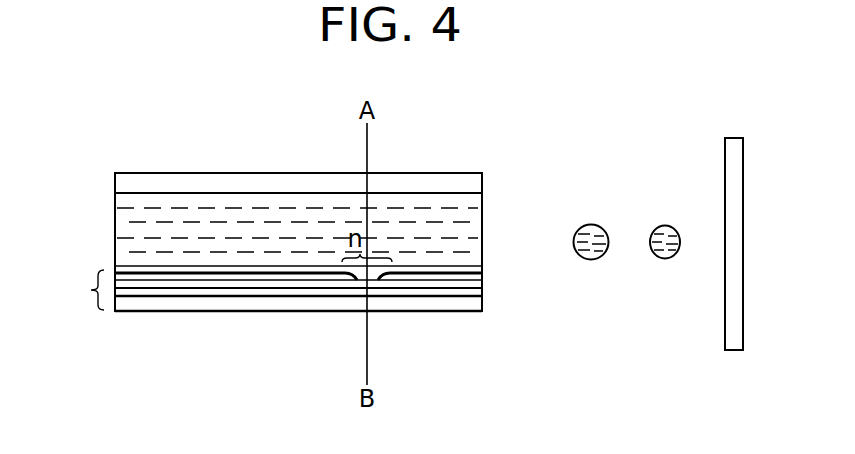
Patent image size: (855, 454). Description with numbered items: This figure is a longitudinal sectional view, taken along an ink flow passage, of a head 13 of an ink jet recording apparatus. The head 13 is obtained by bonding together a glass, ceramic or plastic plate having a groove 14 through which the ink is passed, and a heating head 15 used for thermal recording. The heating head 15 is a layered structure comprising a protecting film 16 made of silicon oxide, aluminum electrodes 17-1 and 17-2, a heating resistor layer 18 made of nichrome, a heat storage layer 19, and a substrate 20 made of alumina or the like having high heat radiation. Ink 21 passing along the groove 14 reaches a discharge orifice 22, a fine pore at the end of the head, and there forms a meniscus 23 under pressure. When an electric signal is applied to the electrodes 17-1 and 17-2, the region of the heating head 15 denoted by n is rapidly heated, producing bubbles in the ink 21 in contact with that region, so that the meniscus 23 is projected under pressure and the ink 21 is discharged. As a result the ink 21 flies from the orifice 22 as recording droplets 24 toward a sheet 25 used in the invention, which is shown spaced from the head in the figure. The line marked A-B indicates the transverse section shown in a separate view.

The head 13 is at (220, 173).
The groove 14 is at (306, 193).
The heating head 15 is at (78, 290).
The protecting film 16 is at (154, 273).
The aluminum electrode 17-1 is at (199, 280).
The aluminum electrode 17-2 is at (460, 280).
The heating resistor layer 18 is at (259, 288).
The heat storage layer 19 is at (296, 296).
The substrate 20 is at (412, 311).
The ink 21 is at (160, 202).
The discharge orifice 22 is at (484, 262).
The meniscus 23 is at (484, 231).
The recording droplets 24 is at (572, 213).
The sheet 25 is at (724, 162).